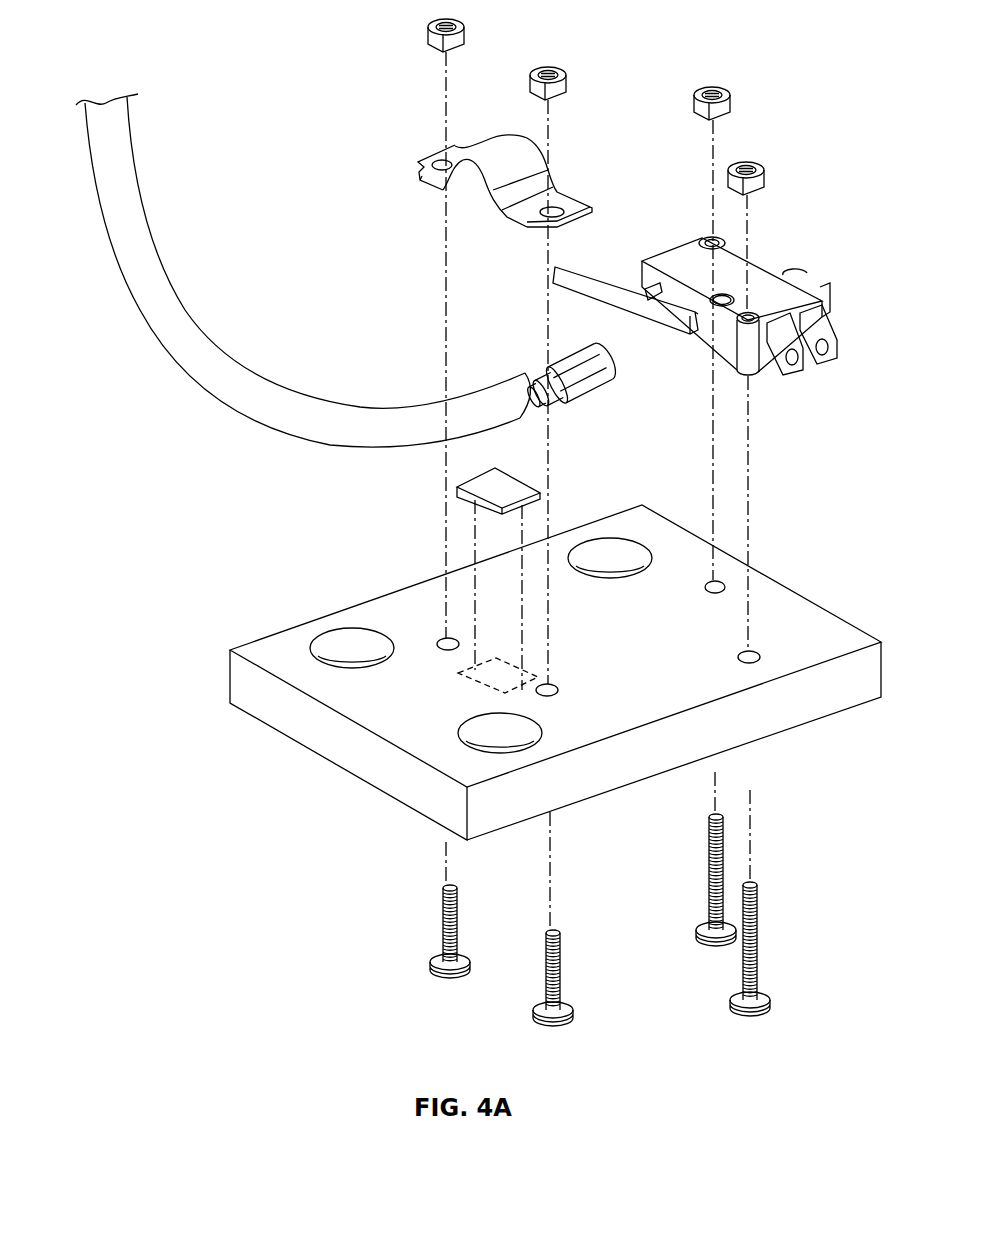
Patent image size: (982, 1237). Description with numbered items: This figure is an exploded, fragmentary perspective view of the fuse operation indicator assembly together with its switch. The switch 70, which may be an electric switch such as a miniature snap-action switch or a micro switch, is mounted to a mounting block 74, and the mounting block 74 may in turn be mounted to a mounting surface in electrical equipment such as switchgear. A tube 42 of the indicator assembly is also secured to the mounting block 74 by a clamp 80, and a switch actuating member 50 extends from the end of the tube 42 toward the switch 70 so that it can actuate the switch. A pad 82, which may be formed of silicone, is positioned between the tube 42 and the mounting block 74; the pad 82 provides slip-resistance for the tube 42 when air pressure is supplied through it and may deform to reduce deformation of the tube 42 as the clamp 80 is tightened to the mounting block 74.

The tube 42 is at (133, 276).
The switch actuating member 50 is at (592, 405).
The switch 70 is at (775, 247).
The mounting block 74 is at (770, 575).
The clamp 80 is at (510, 150).
The pad 82 is at (508, 490).